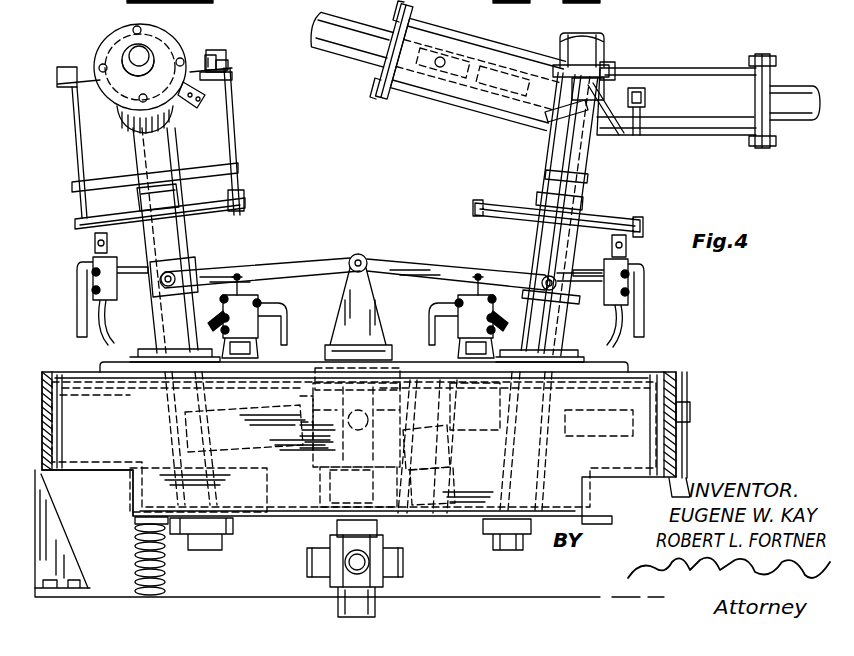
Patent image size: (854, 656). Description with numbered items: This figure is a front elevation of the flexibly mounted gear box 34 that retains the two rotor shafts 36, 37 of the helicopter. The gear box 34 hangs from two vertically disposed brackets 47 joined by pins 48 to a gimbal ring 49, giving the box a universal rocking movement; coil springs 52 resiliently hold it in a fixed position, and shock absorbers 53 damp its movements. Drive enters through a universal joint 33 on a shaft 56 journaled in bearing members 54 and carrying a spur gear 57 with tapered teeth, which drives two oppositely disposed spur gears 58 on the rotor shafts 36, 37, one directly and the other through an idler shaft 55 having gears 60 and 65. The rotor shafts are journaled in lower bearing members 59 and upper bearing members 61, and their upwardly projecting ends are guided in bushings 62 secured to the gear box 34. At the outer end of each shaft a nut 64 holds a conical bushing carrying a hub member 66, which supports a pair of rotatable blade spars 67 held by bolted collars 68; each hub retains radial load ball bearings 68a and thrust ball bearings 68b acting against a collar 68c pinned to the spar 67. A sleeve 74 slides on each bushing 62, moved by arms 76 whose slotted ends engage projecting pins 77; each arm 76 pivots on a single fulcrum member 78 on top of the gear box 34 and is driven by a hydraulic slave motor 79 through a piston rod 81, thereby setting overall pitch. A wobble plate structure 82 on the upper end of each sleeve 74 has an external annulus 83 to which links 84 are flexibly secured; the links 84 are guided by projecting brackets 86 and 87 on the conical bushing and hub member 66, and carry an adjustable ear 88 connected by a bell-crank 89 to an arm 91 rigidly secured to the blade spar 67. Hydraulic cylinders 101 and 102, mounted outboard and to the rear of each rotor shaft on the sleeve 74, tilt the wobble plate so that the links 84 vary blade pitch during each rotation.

The universal joint 33 is at (405, 565).
The gear box 34 is at (636, 372).
The rotor shaft 36 is at (600, 196).
The rotor shaft 37 is at (180, 188).
The bracket 47 is at (45, 525).
The pin 48 is at (55, 390).
The gimbal ring 49 is at (678, 385).
The spring 52 is at (135, 540).
The shock absorber 53 is at (165, 562).
The bearing member 54 is at (388, 350).
The idler shaft 55 is at (443, 484).
The shaft 56 is at (340, 522).
The spur gear 57 is at (300, 410).
The spur gear 58 is at (228, 418).
The lower bearing member 59 is at (238, 512).
The gear 60 is at (448, 463).
The upper bearing member 61 is at (145, 395).
The bushing 62 is at (152, 315).
The nut 64 is at (612, 45).
The gear 65 is at (475, 412).
The hub member 66 is at (690, 138).
The blade spar 67 is at (800, 120).
The collar 68 is at (96, 48).
The radial load ball bearing 68a is at (397, 95).
The thrust ball bearing 68b is at (455, 28).
The collar 68c is at (447, 105).
The sleeve 74 is at (195, 258).
The arm 76 is at (278, 268).
The projecting pin 77 is at (185, 278).
The fulcrum member 78 is at (367, 280).
The hydraulic slave motor 79 is at (262, 302).
The piston rod 81 is at (240, 278).
The wobble plate structure 82 is at (252, 213).
The external annulus 83 is at (250, 192).
The link 84 is at (238, 125).
The projecting bracket 86 is at (178, 170).
The projecting bracket 87 is at (232, 76).
The adjustable ear 88 is at (222, 66).
The bell-crank 89 is at (202, 63).
The arm 91 is at (190, 107).
The hydraulic cylinder 101 is at (92, 262).
The hydraulic cylinder 102 is at (630, 268).